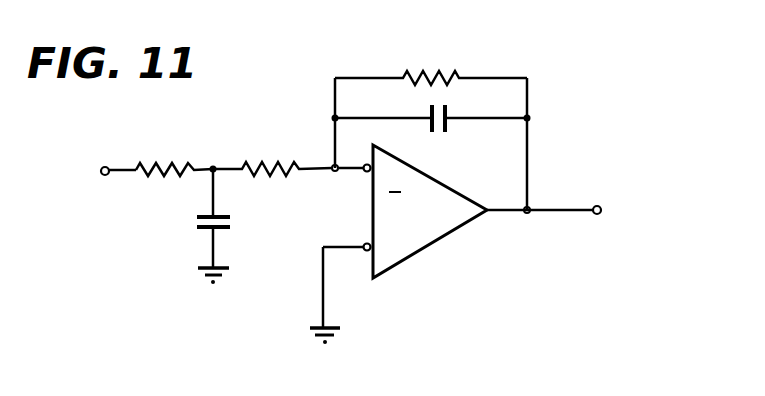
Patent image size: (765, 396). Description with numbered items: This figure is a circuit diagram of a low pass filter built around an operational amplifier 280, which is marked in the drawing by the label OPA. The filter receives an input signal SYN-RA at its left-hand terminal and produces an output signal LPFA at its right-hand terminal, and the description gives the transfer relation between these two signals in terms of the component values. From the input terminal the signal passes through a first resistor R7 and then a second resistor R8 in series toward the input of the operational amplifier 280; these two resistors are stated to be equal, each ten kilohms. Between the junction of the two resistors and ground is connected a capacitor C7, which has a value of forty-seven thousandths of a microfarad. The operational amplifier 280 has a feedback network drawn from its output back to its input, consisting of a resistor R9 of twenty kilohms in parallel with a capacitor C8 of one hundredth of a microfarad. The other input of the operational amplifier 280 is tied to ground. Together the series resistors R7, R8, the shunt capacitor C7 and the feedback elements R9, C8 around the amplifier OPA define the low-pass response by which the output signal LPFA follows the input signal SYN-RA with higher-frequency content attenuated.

The operational amplifier 280 is at (429, 213).
The resistor R7 is at (174, 153).
The resistor R8 is at (272, 152).
The resistor R9 is at (431, 103).
The capacitor C7 is at (234, 226).
The capacitor C8 is at (431, 136).
The operational amplifier label OPA is at (440, 239).
The input signal SYN-RA is at (141, 170).
The output signal LPFA is at (562, 194).